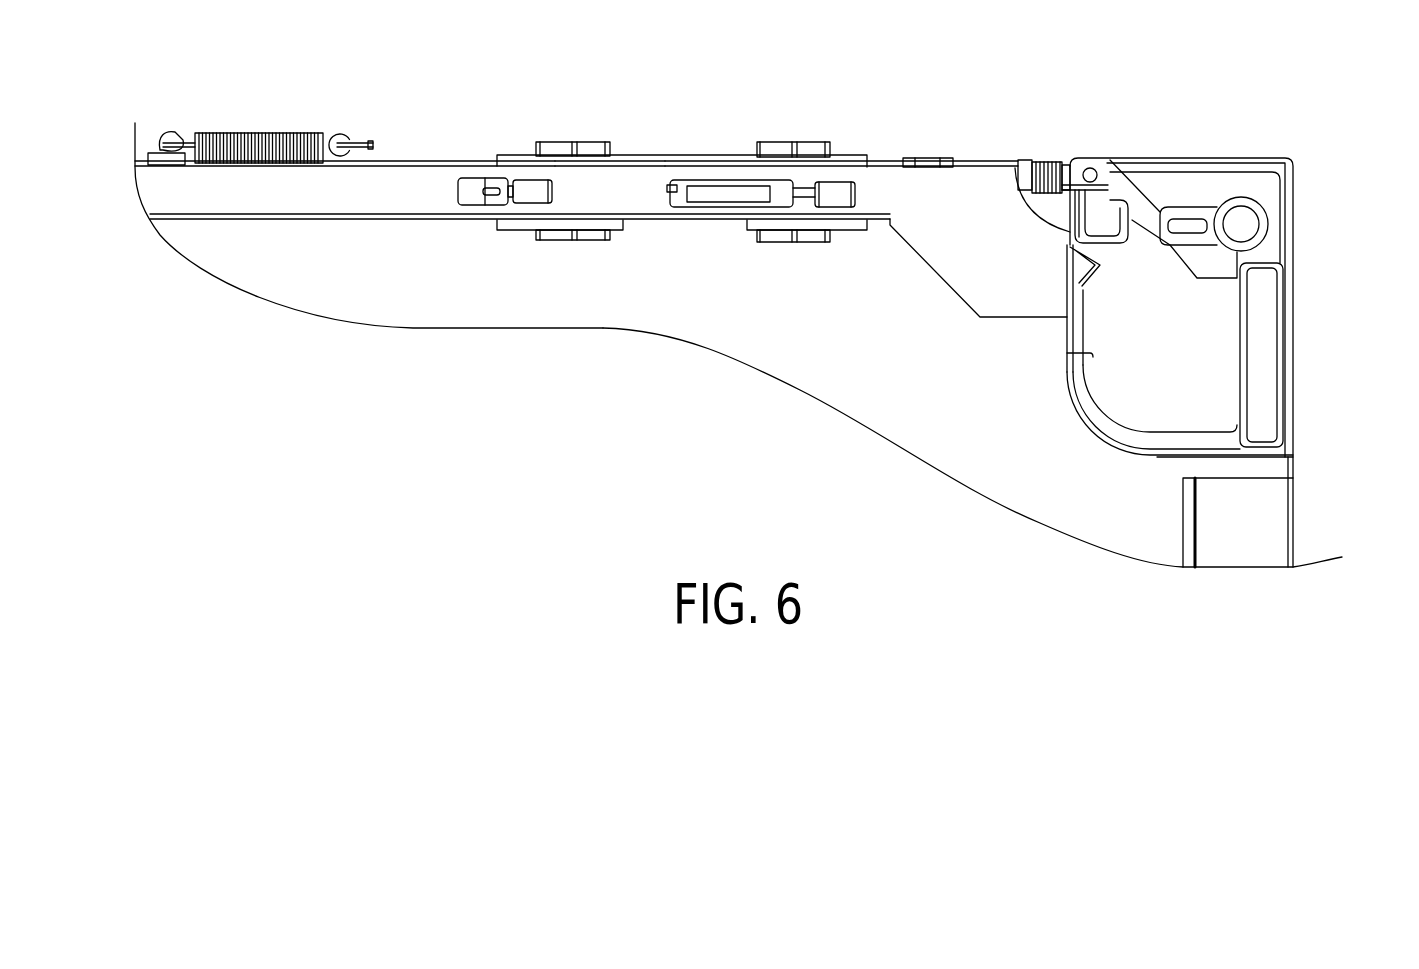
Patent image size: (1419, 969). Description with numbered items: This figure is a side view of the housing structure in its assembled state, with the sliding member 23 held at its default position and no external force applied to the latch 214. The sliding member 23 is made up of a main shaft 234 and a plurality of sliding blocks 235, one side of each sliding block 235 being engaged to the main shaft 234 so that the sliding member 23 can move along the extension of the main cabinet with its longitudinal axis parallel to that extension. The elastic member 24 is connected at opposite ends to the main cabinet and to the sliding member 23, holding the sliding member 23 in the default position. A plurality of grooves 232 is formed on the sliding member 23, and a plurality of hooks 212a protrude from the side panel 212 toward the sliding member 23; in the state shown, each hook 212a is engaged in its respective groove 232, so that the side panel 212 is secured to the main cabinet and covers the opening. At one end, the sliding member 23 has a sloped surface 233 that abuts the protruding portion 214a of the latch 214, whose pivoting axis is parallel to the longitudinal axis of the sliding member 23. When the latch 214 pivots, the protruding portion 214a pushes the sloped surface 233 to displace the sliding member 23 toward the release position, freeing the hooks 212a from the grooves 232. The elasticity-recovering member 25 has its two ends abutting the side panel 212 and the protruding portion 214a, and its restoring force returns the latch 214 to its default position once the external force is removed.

The sliding member 23 is at (779, 348).
The elastic member 24 is at (278, 137).
The elasticity-recovering member 25 is at (1055, 163).
The side panel 212 is at (1250, 522).
The hook 212a is at (700, 156).
The latch 214 is at (1253, 157).
The protruding portion 214a is at (1145, 225).
The groove 232 is at (780, 190).
The sloped surface 233 is at (1068, 253).
The main shaft 234 is at (595, 195).
The sliding block 235 is at (530, 195).